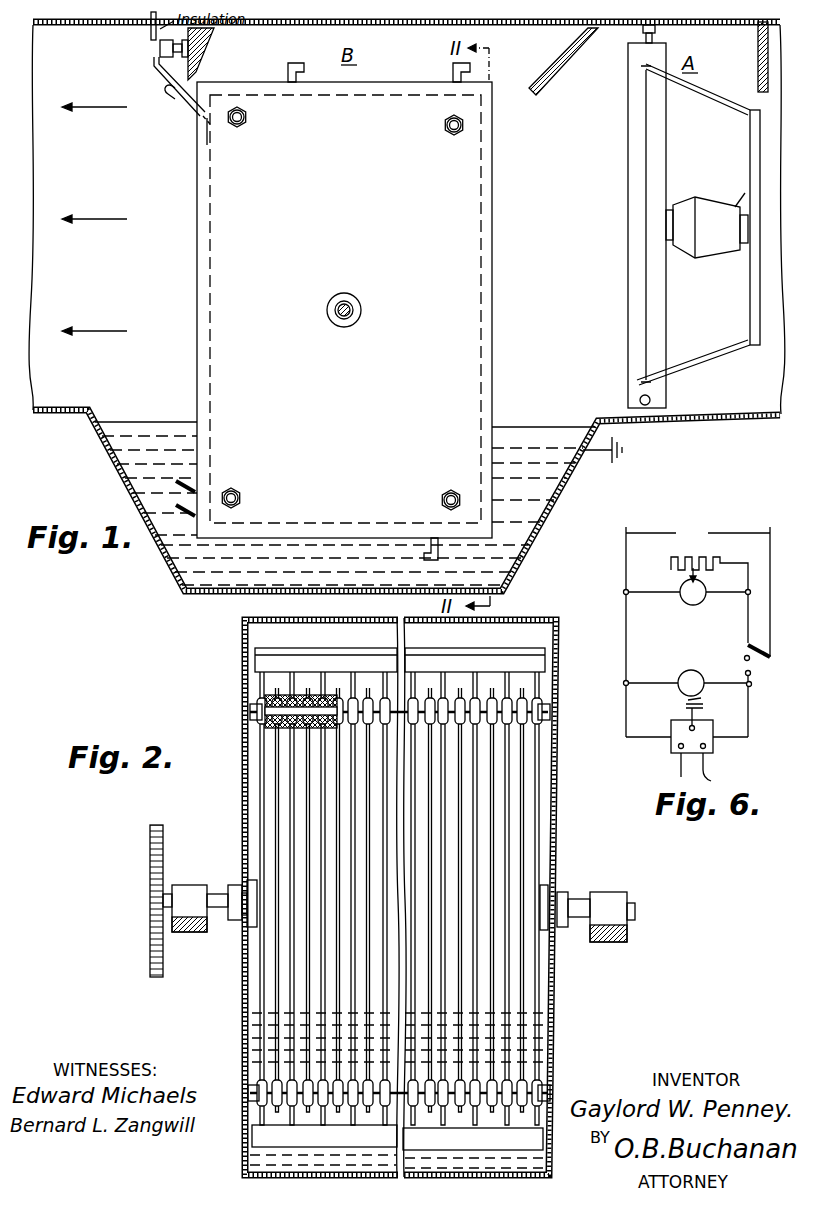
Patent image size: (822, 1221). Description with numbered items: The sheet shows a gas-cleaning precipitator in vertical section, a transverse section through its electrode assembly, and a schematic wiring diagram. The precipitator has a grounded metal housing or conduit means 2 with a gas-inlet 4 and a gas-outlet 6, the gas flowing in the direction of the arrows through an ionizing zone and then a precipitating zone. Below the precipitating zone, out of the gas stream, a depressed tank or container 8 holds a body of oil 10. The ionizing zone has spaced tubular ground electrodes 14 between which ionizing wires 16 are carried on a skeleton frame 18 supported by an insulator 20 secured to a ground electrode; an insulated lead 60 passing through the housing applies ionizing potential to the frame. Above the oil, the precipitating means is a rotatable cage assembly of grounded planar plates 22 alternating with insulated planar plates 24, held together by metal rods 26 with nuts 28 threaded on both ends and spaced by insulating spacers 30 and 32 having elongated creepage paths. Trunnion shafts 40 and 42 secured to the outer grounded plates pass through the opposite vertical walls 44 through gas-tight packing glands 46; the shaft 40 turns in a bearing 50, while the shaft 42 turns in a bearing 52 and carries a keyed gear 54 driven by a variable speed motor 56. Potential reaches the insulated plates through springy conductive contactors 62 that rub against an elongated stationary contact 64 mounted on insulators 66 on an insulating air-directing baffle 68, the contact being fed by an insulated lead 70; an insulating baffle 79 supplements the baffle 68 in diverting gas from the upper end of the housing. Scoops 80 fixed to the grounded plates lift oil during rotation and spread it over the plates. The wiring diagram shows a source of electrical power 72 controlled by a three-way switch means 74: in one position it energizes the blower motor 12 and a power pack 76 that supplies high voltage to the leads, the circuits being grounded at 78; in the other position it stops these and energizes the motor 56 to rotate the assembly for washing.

In FIG. 1, the housing or conduit means 2 is at (410, 30).
In FIG. 2, the housing or conduit means 2 is at (331, 619).
In FIG. 1, the gas-inlet 4 is at (786, 158).
In FIG. 1, the gas-outlet 6 is at (34, 156).
In FIG. 1, the tank or container 8 is at (539, 526).
In FIG. 1, the oil 10 is at (564, 474).
In FIG. 2, the oil 10 is at (550, 1032).
In FIG. 6, the blower motor 12 is at (701, 672).
In FIG. 1, the ground electrodes 14 is at (627, 259).
In FIG. 1, the ionizing wires 16 is at (648, 160).
In FIG. 1, the skeleton frame 18 is at (750, 156).
In FIG. 1, the insulator 20 is at (716, 253).
In FIG. 1, the grounded planar plates 22 is at (492, 296).
In FIG. 2, the grounded planar plates 22 is at (288, 764).
In FIG. 1, the insulated planar plates 24 is at (482, 263).
In FIG. 2, the insulated planar plates 24 is at (275, 800).
In FIG. 1, the rods 26 is at (444, 126).
In FIG. 2, the rods 26 is at (551, 718).
In FIG. 1, the nuts 28 is at (450, 137).
In FIG. 2, the nuts 28 is at (550, 709).
In FIG. 2, the insulating spacers 30 is at (262, 729).
In FIG. 2, the insulating spacers 32 is at (283, 726).
In FIG. 2, the trunnion shaft 40 is at (582, 912).
In FIG. 1, the trunnion shaft 42 is at (332, 322).
In FIG. 2, the trunnion shaft 42 is at (222, 908).
In FIG. 2, the vertical walls 44 is at (240, 980).
In FIG. 2, the gas-tight packing glands 46 is at (232, 884).
In FIG. 2, the bearing 50 is at (617, 892).
In FIG. 2, the bearing 52 is at (179, 885).
In FIG. 2, the gear 54 is at (150, 936).
In FIG. 6, the variable speed motor 56 is at (701, 604).
In FIG. 1, the insulated lead 60 is at (758, 67).
In FIG. 6, the insulated lead 60 is at (719, 774).
In FIG. 1, the conductive contactor 62 is at (183, 104).
In FIG. 1, the stationary contact 64 is at (157, 77).
In FIG. 1, the insulators 66 is at (158, 52).
In FIG. 1, the insulating air-directing baffle 68 is at (214, 50).
In FIG. 1, the insulated lead 70 is at (151, 30).
In FIG. 6, the insulated lead 70 is at (679, 770).
In FIG. 6, the source of electrical power 72 is at (709, 557).
In FIG. 6, the three-way switch means 74 is at (752, 666).
In FIG. 6, the power pack 76 is at (713, 726).
In FIG. 6, the ground 78 is at (704, 704).
In FIG. 1, the insulating baffle 79 is at (552, 78).
In FIG. 1, the scoops 80 is at (298, 64).
In FIG. 2, the scoops 80 is at (494, 668).